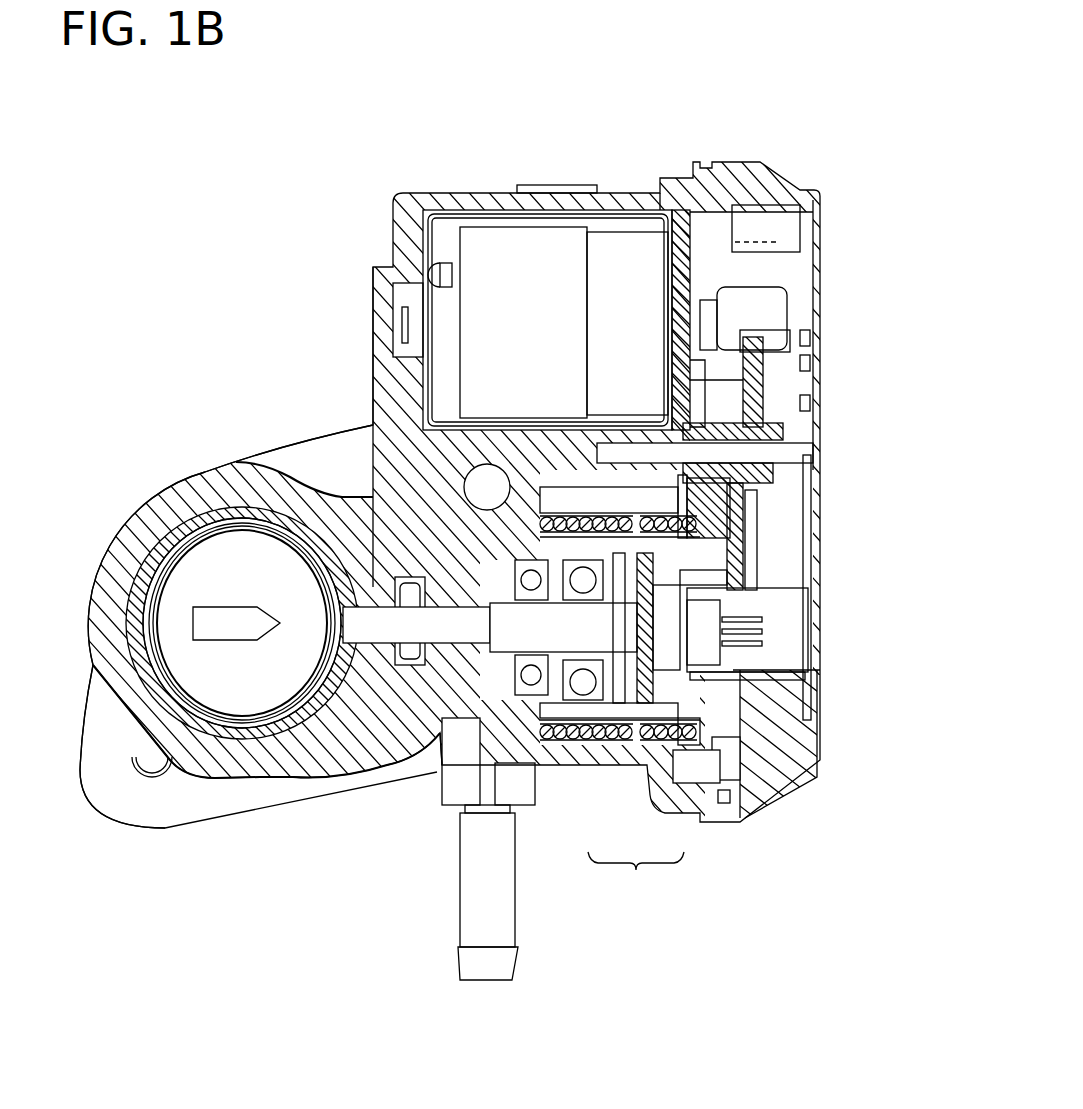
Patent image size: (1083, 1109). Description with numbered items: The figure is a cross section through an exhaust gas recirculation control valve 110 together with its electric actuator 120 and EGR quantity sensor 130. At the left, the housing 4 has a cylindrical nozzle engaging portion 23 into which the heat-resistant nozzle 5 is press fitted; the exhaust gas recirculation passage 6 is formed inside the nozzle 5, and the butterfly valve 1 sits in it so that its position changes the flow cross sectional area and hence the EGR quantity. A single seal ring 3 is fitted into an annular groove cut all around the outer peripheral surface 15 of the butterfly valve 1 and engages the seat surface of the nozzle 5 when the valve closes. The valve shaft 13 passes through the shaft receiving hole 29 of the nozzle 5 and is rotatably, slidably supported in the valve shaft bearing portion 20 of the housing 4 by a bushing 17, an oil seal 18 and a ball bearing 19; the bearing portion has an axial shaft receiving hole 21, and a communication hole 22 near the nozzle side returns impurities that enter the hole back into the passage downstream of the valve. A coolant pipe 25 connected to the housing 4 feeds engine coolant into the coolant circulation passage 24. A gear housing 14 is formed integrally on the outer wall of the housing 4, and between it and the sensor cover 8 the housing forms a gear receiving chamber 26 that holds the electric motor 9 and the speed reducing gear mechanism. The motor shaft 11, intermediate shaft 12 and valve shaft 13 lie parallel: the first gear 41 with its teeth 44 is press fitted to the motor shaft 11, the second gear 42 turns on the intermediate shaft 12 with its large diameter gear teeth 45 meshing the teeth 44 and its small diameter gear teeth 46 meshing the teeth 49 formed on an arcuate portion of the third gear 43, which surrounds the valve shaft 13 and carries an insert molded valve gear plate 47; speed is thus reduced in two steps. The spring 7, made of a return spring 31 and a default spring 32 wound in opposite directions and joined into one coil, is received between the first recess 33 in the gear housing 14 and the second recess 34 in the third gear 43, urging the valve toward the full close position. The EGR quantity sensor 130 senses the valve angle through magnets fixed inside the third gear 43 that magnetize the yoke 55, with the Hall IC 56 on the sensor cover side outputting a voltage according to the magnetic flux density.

The butterfly valve 1 is at (203, 563).
The seal ring 3 is at (173, 560).
The housing 4 is at (373, 375).
The nozzle 5 is at (217, 730).
The exhaust gas recirculation passage 6 is at (140, 680).
The spring 7 is at (636, 877).
The sensor cover 8 is at (812, 488).
The electric motor 9 is at (545, 235).
The motor shaft 11 is at (660, 190).
The intermediate shaft 12 is at (785, 452).
The valve shaft 13 is at (455, 650).
The gear housing 14 is at (693, 797).
The outer peripheral surface 15 is at (200, 483).
The bushing 17 is at (458, 790).
The oil seal 18 is at (532, 690).
The ball bearing 19 is at (568, 700).
The valve shaft bearing portion 20 is at (325, 478).
The shaft receiving hole 21 is at (413, 767).
The communication hole 22 is at (380, 760).
The nozzle engaging portion 23 is at (267, 753).
The coolant circulation passage 24 is at (370, 410).
The coolant pipe 25 is at (487, 963).
The gear receiving chamber 26 is at (713, 382).
The shaft receiving hole 29 is at (270, 462).
The return spring 31 is at (582, 730).
The default spring 32 is at (615, 730).
The first recess 33 is at (538, 505).
The second recess 34 is at (673, 495).
The first gear 41 is at (767, 318).
The second gear 42 is at (757, 428).
The third gear 43 is at (770, 575).
The teeth 44 is at (755, 290).
The teeth 45 is at (800, 350).
The teeth 46 is at (670, 390).
The valve gear plate 47 is at (750, 672).
The teeth 49 is at (740, 520).
The yoke 55 is at (791, 606).
The Hall IC 56 is at (710, 632).
The exhaust gas recirculation control valve 110 is at (211, 431).
The electric actuator 120 is at (612, 124).
The EGR quantity sensor 130 is at (872, 733).